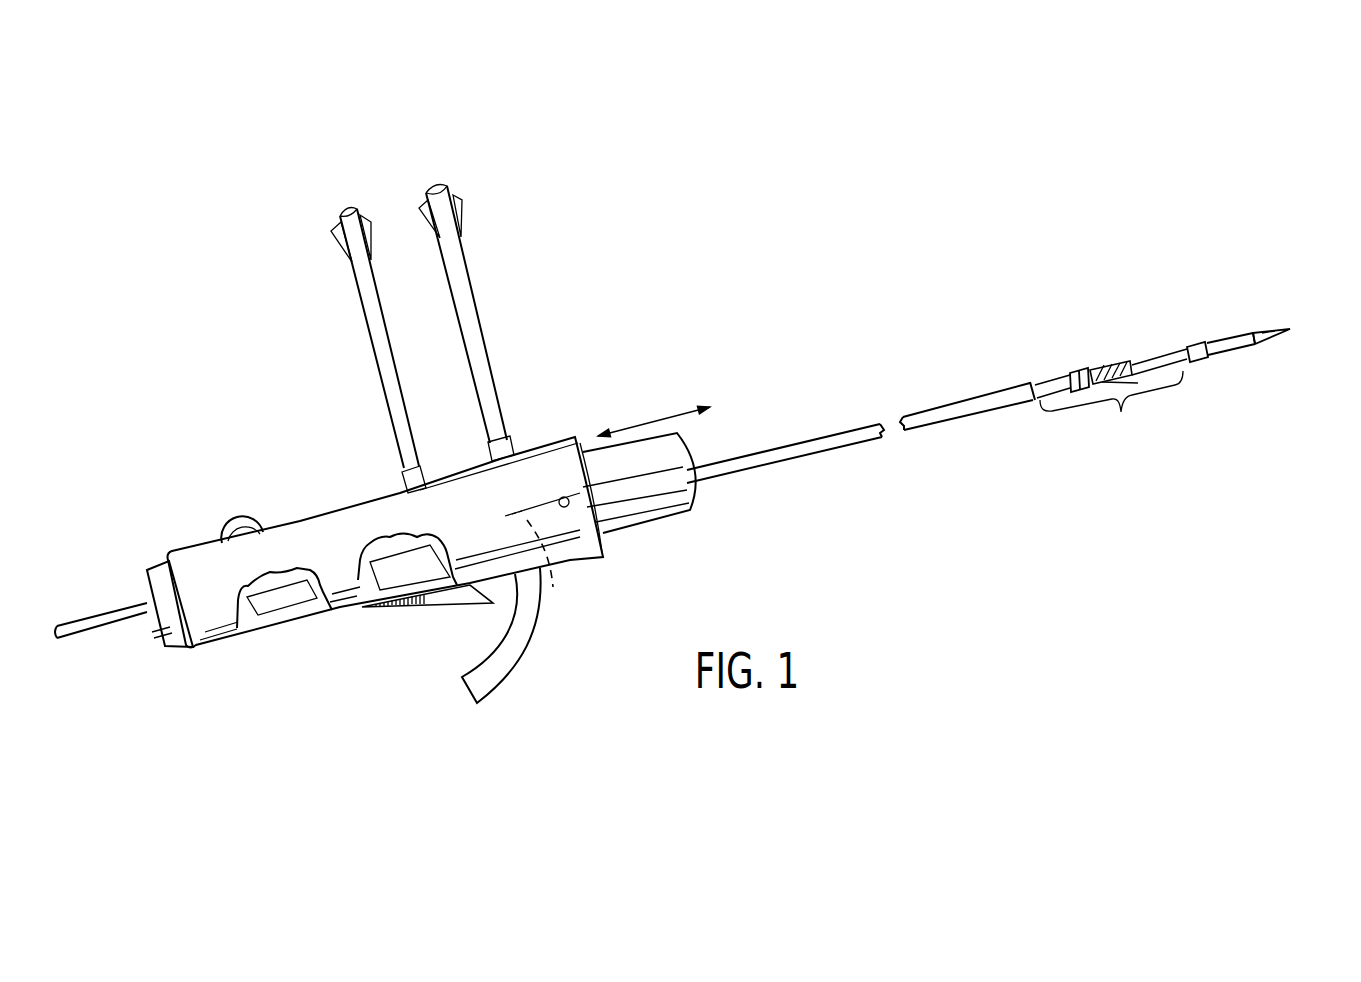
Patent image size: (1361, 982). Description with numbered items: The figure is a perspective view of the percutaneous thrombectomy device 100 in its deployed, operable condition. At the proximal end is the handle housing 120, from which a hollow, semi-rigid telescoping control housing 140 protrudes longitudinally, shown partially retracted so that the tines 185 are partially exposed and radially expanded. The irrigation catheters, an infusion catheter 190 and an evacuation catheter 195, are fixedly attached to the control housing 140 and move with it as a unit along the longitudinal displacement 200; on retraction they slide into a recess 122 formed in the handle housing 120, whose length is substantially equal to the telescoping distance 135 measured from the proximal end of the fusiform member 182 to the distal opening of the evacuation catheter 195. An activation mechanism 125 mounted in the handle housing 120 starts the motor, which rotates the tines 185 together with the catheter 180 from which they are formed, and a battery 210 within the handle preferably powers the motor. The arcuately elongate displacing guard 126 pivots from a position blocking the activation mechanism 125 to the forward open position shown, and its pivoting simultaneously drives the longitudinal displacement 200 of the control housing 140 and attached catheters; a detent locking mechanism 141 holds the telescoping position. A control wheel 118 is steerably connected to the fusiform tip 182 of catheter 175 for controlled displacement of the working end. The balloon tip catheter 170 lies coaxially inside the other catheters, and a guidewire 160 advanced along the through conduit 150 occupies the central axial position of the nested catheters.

The percutaneous thrombectomy device 100 is at (913, 247).
The control wheel 118 is at (241, 517).
The handle housing 120 is at (332, 529).
The recess 122 is at (539, 447).
The activation mechanism 125 is at (445, 602).
The displacing guard 126 is at (505, 660).
The telescoping distance 135 is at (1111, 409).
The control housing 140 is at (617, 510).
The detent locking mechanism 141 is at (567, 508).
The through conduit 150 is at (146, 604).
The guidewire 160 is at (1289, 329).
The balloon tip catheter 170 is at (1253, 345).
The catheter 175 is at (1252, 340).
The catheter 180 is at (1085, 372).
The fusiform member 182 is at (1197, 345).
The tines 185 is at (1097, 367).
The infusion catheter 190 is at (367, 318).
The evacuation catheter 195 is at (477, 313).
The longitudinal displacement 200 is at (285, 620).
The battery 210 is at (393, 590).